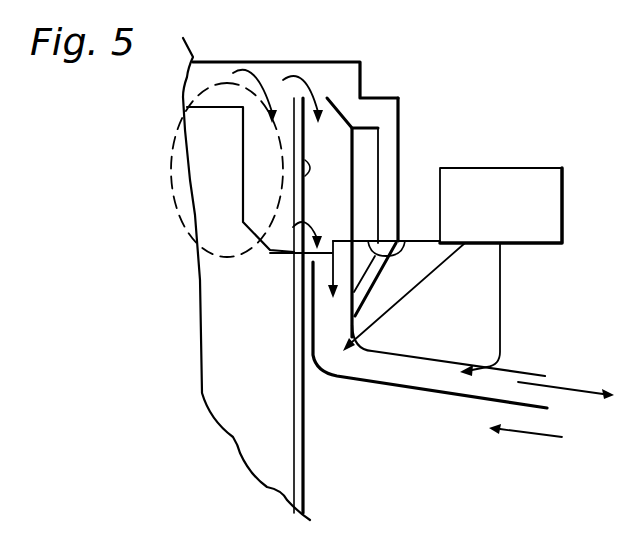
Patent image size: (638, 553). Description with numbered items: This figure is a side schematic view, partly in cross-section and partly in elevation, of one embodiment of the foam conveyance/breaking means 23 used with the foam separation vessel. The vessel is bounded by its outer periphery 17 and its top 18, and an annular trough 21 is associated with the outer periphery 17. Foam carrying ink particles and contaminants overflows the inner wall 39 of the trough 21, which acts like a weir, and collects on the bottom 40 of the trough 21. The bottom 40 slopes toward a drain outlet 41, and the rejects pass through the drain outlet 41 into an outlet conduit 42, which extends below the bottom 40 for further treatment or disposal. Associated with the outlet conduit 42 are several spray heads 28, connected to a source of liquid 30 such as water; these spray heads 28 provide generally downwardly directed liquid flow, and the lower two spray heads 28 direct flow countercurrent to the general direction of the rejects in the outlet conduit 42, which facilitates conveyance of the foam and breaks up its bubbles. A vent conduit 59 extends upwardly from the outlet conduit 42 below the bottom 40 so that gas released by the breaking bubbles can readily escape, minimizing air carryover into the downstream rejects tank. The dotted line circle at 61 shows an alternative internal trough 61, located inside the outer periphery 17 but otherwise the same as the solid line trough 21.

The outer periphery 17 is at (305, 470).
The top 18 is at (263, 61).
The annular trough 21 is at (344, 82).
The foam conveyance/breaking means 23 is at (525, 435).
The spray head 28 is at (487, 365).
The source of liquid 30 is at (506, 167).
The inner wall 39 is at (280, 173).
The bottom 40 is at (317, 259).
The drain outlet 41 is at (260, 274).
The outlet conduit 42 is at (423, 383).
The vent conduit 59 is at (402, 166).
The internal trough 61 is at (232, 202).